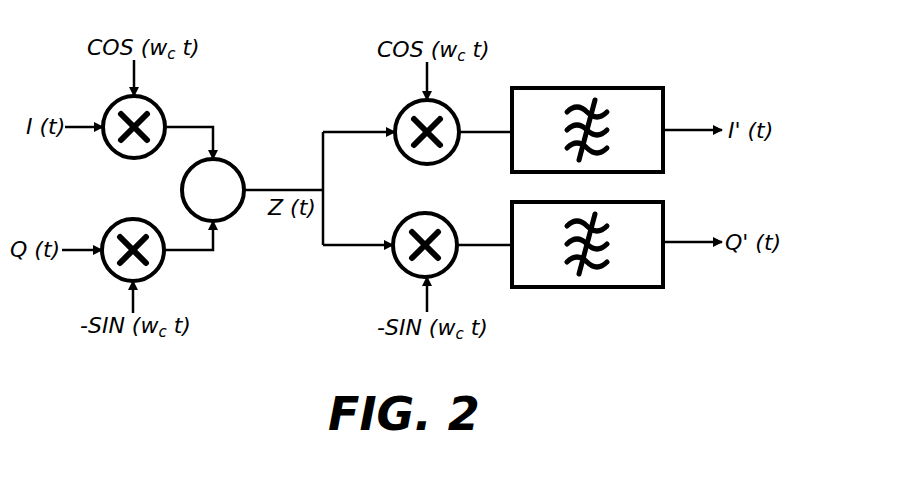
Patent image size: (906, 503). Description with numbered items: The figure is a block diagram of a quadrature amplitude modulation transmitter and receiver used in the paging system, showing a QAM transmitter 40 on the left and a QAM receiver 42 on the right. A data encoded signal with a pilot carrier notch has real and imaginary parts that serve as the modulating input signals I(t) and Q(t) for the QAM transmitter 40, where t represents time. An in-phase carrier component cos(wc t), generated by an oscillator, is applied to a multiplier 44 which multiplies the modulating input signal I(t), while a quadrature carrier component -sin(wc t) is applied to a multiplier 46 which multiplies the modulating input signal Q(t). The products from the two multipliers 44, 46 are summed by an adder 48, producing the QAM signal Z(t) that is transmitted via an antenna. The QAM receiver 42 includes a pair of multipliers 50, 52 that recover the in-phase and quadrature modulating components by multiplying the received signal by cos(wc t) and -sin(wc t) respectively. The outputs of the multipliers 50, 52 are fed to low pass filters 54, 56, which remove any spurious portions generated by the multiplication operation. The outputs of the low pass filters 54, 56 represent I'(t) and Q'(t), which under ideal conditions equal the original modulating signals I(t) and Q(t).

The QAM transmitter 40 is at (208, 270).
The QAM receiver 42 is at (338, 257).
The multiplier 44 is at (158, 107).
The multiplier 46 is at (113, 225).
The adder 48 is at (243, 166).
The multiplier 50 is at (448, 107).
The multiplier 52 is at (430, 213).
The low pass filter 54 is at (647, 88).
The low pass filter 56 is at (658, 202).